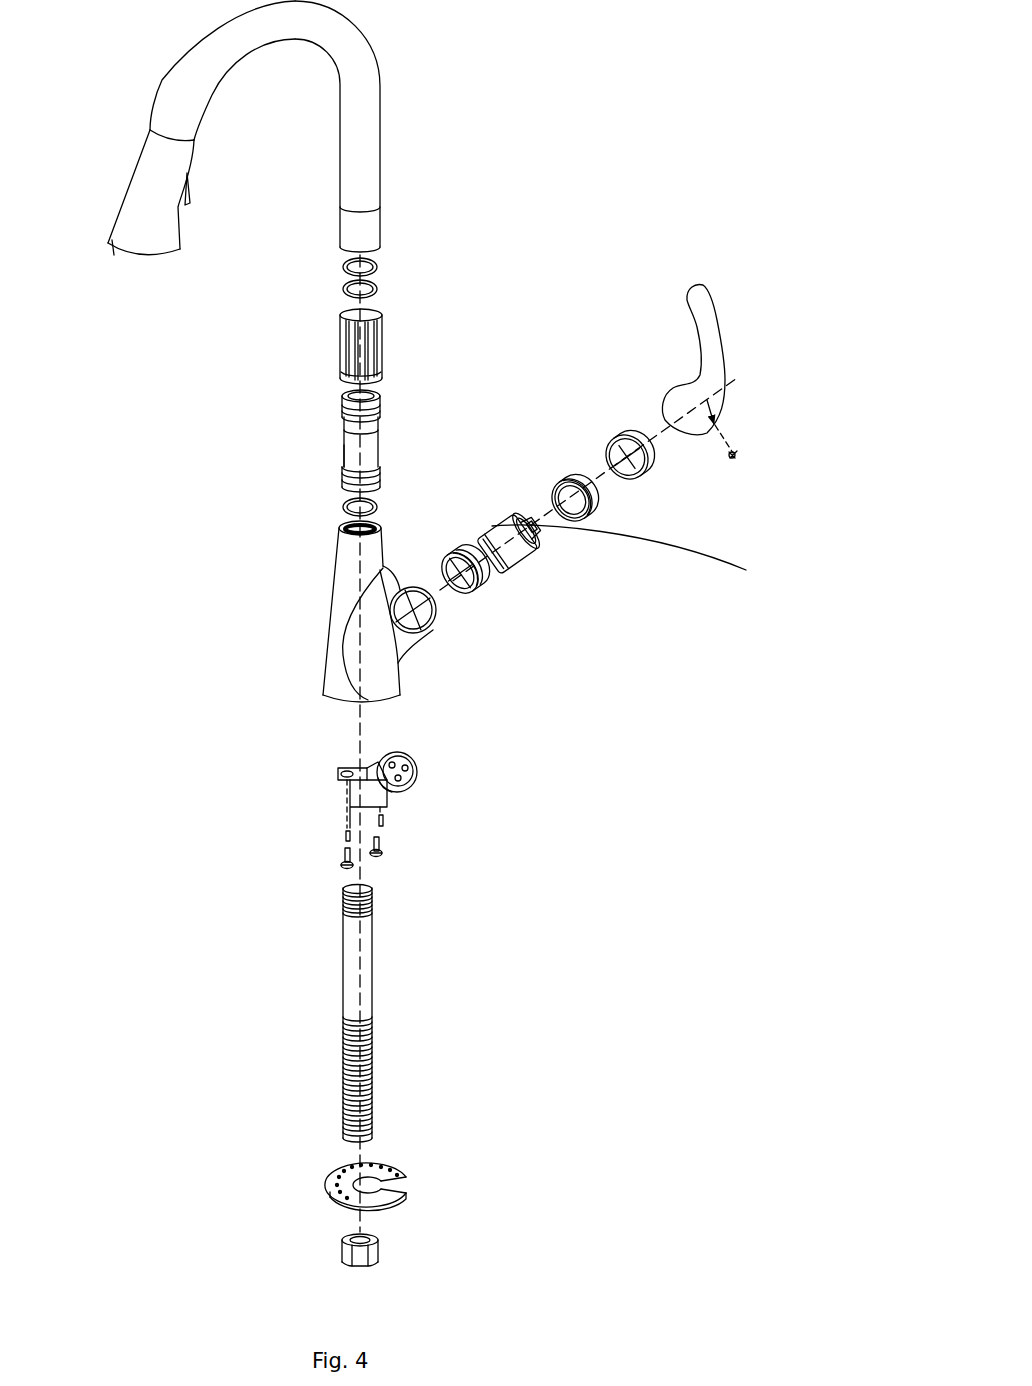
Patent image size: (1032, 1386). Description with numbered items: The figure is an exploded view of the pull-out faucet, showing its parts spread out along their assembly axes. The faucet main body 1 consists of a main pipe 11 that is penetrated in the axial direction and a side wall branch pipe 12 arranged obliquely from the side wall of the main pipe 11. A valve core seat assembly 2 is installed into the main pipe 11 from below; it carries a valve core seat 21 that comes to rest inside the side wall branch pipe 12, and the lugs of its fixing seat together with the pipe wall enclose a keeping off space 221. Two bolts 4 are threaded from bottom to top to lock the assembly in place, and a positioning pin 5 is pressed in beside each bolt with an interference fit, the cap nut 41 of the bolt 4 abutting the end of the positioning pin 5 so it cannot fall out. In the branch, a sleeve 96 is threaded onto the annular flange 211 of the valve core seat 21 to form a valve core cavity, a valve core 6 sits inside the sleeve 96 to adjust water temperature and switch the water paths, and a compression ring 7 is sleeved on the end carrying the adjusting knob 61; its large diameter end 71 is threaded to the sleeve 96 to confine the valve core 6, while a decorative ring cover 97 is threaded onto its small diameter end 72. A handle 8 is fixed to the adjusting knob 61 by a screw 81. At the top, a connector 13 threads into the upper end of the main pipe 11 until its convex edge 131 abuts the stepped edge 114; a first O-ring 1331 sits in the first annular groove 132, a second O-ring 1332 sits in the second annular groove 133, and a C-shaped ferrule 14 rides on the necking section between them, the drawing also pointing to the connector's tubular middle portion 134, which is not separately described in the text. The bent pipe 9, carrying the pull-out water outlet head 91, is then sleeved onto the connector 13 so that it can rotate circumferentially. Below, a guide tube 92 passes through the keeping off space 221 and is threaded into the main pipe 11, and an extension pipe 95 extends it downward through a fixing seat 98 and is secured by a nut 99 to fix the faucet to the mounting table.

The faucet main body 1 is at (373, 603).
The main pipe 11 is at (344, 602).
The stepped edge 114 is at (381, 527).
The side wall branch pipe 12 is at (400, 633).
The connector 13 is at (403, 420).
The convex edge 131 is at (343, 468).
The first annular groove 132 is at (343, 474).
The second annular groove 133 is at (380, 408).
The cartridge body 134 is at (373, 438).
The first O-ring 1331 is at (343, 507).
The second O-ring 1332 is at (373, 288).
The C-shaped ferrule 14 is at (380, 343).
The valve core seat assembly 2 is at (298, 765).
The valve core seat 21 is at (448, 765).
The annular flange 211 is at (420, 767).
The keeping off space 221 is at (363, 767).
The bolt 4 is at (357, 860).
The cap nut 41 is at (345, 865).
The positioning pin 5 is at (345, 835).
The valve core 6 is at (532, 554).
The adjusting knob 61 is at (637, 555).
The compression ring 7 is at (579, 471).
The large diameter end 71 is at (545, 503).
The small diameter end 72 is at (568, 478).
The handle 8 is at (746, 387).
The screw 81 is at (738, 460).
The bent pipe 9 is at (372, 132).
The pull-out water outlet head 91 is at (205, 227).
The guide tube 92 is at (272, 1014).
The extension pipe 95 is at (342, 1078).
The sleeve 96 is at (483, 590).
The decorative ring cover 97 is at (647, 480).
The fixing seat 98 is at (410, 1177).
The nut 99 is at (392, 1250).